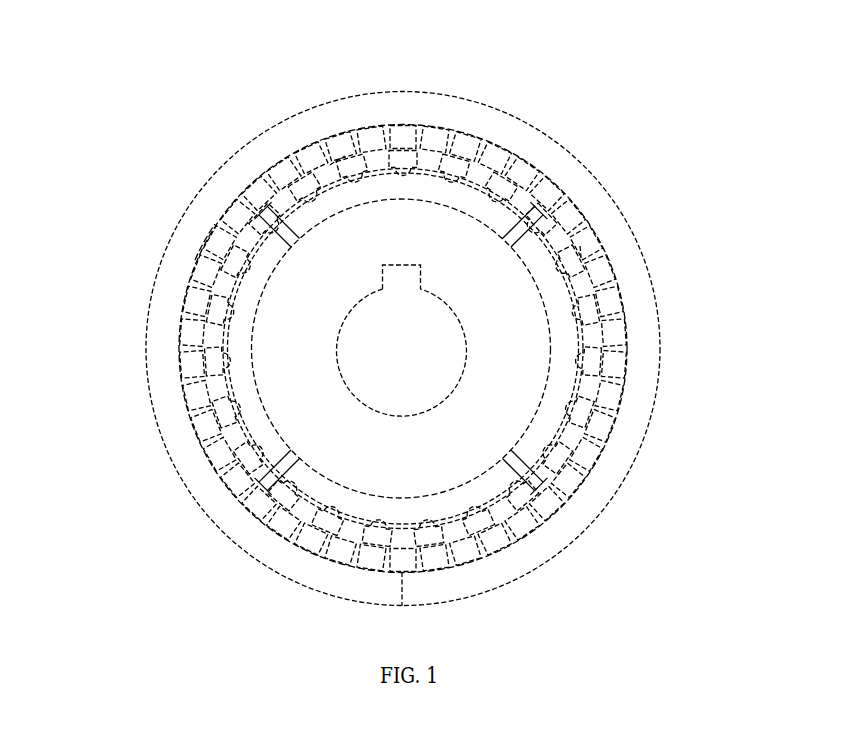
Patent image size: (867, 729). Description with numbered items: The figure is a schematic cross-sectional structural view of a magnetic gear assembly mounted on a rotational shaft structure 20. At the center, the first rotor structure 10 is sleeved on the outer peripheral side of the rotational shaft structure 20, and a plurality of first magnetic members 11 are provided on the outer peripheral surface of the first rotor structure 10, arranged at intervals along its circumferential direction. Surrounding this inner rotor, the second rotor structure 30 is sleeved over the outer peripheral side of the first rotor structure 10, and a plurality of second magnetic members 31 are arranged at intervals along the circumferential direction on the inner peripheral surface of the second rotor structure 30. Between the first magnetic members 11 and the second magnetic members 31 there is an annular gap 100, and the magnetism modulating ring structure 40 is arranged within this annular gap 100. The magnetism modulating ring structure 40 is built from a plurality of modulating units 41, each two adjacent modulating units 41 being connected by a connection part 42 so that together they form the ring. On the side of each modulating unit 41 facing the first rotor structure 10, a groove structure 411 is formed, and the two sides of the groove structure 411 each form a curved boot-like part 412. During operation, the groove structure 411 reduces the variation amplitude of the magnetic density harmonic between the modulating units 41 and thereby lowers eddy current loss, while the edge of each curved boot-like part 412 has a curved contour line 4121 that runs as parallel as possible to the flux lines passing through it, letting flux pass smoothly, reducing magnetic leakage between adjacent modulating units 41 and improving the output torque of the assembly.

The first rotor structure 10 is at (300, 425).
The first magnetic member 11 is at (232, 358).
The rotational shaft structure 20 is at (434, 385).
The second rotor structure 30 is at (235, 170).
The second magnetic member 31 is at (212, 272).
The magnetism modulating ring structure 40 is at (466, 289).
The modulating unit 41 is at (478, 287).
The groove structure 411 is at (565, 251).
The curved boot-like part 412 is at (583, 234).
The curved contour line 4121 is at (480, 163).
The connection part 42 is at (427, 167).
The annular gap 100 is at (327, 170).